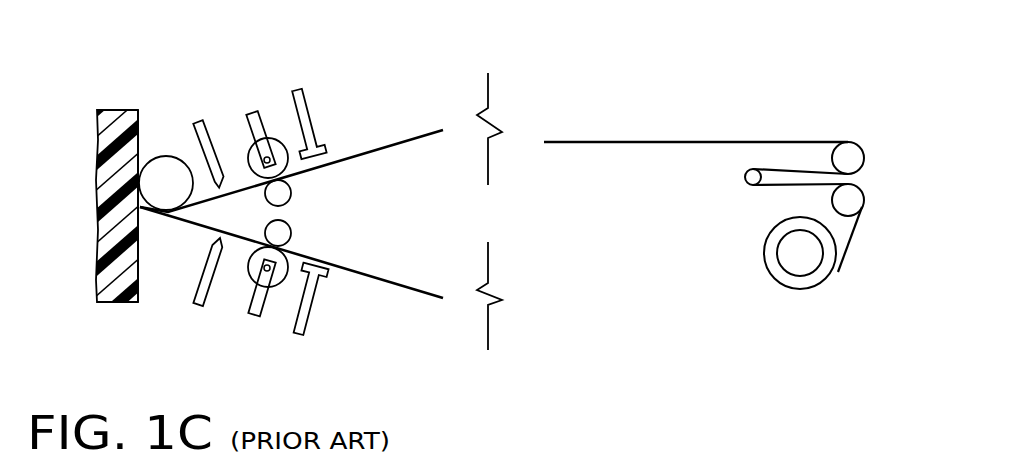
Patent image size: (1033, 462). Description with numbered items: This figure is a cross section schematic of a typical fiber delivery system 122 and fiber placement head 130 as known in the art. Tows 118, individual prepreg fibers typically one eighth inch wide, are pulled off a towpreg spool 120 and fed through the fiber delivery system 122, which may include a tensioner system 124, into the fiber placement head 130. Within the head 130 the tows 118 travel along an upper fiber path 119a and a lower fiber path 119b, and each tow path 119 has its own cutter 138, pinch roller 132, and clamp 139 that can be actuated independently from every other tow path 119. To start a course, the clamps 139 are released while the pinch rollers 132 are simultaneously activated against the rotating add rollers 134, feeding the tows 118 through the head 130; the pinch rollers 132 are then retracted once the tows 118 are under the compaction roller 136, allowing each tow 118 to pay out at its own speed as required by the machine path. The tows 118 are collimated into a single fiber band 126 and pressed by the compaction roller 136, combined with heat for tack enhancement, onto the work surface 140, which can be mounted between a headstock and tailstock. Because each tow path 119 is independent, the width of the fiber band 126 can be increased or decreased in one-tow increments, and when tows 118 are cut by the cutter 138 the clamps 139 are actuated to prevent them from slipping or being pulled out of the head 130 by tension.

The tows 118 is at (412, 133).
The fiber path 119 is at (597, 157).
The upper fiber path 119a is at (372, 170).
The lower fiber path 119b is at (378, 252).
The towpreg spool 120 is at (850, 282).
The fiber delivery system 122 is at (570, 60).
The tensioner system 124 is at (880, 163).
The fiber band 126 is at (138, 140).
The fiber placement head 130 is at (127, 350).
The pinch rollers 132 is at (275, 113).
The add rollers 134 is at (291, 204).
The compaction roller 136 is at (163, 156).
The cutter 138 is at (206, 137).
The clamps 139 is at (313, 133).
The surface 140 is at (138, 282).